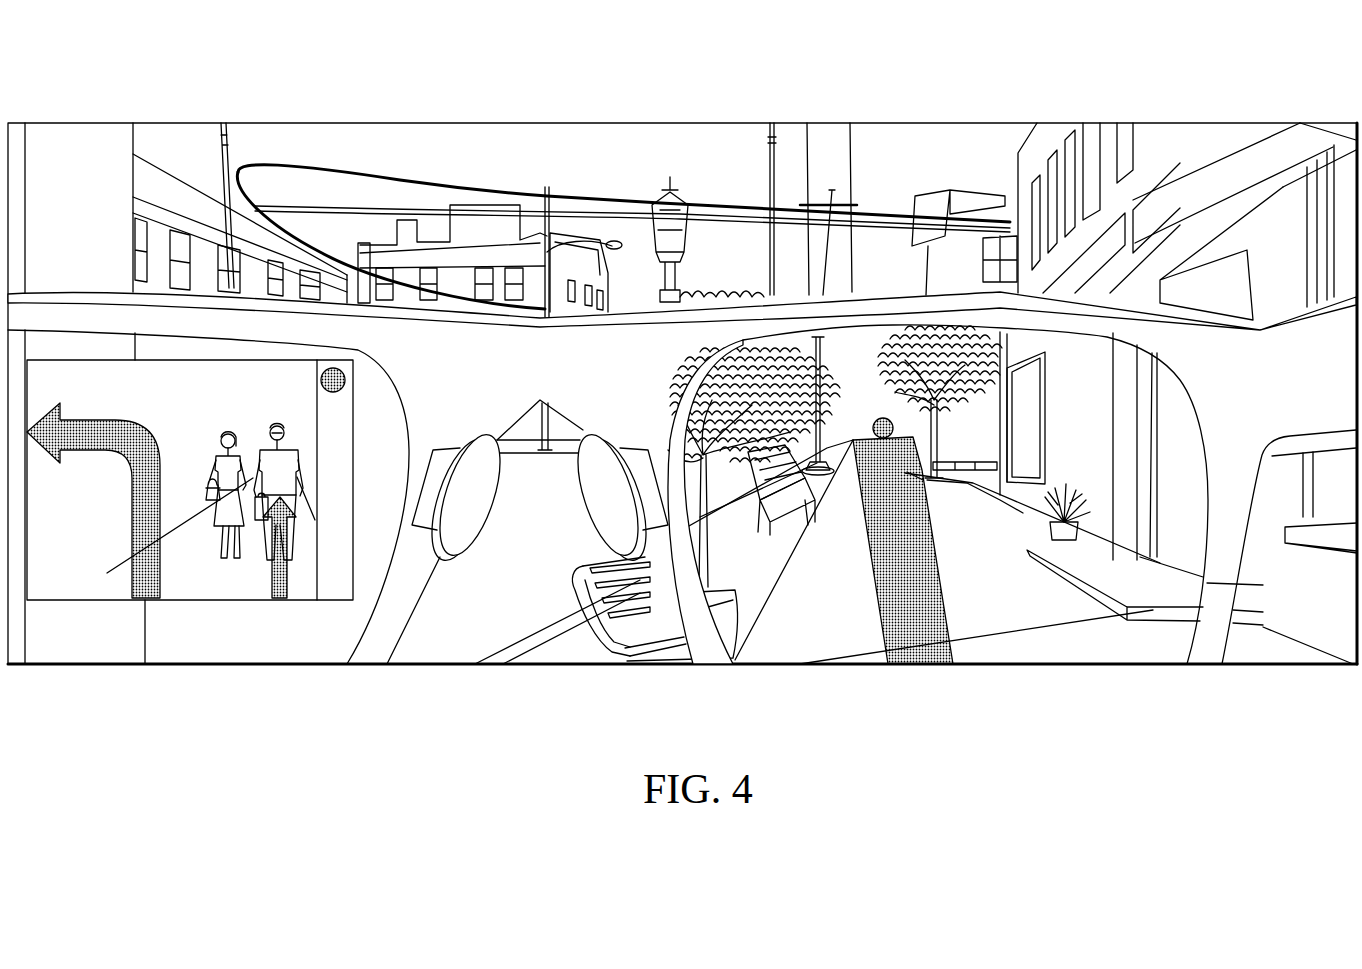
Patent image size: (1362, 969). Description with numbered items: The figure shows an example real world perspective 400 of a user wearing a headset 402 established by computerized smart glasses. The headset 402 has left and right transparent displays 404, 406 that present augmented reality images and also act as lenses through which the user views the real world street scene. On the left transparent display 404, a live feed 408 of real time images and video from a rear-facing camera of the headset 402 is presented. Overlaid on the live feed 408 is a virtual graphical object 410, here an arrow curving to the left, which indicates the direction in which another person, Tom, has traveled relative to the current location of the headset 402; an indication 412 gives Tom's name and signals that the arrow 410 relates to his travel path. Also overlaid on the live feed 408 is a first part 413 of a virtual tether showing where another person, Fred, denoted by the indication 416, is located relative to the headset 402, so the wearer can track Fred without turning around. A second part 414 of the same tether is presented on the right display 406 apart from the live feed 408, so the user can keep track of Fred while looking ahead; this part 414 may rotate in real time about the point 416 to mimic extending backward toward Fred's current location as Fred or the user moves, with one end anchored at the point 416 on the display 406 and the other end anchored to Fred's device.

The real world perspective 400 is at (166, 76).
The headset 402 is at (708, 660).
The left transparent display 404 is at (246, 648).
The right transparent display 406 is at (1118, 655).
The live feed 408 is at (185, 392).
The virtual/graphical object 410 is at (130, 586).
The indication 412 is at (82, 359).
The first part of virtual tether 413 is at (270, 586).
The part of the tether 414 is at (852, 588).
The indication / point 416 is at (879, 418).